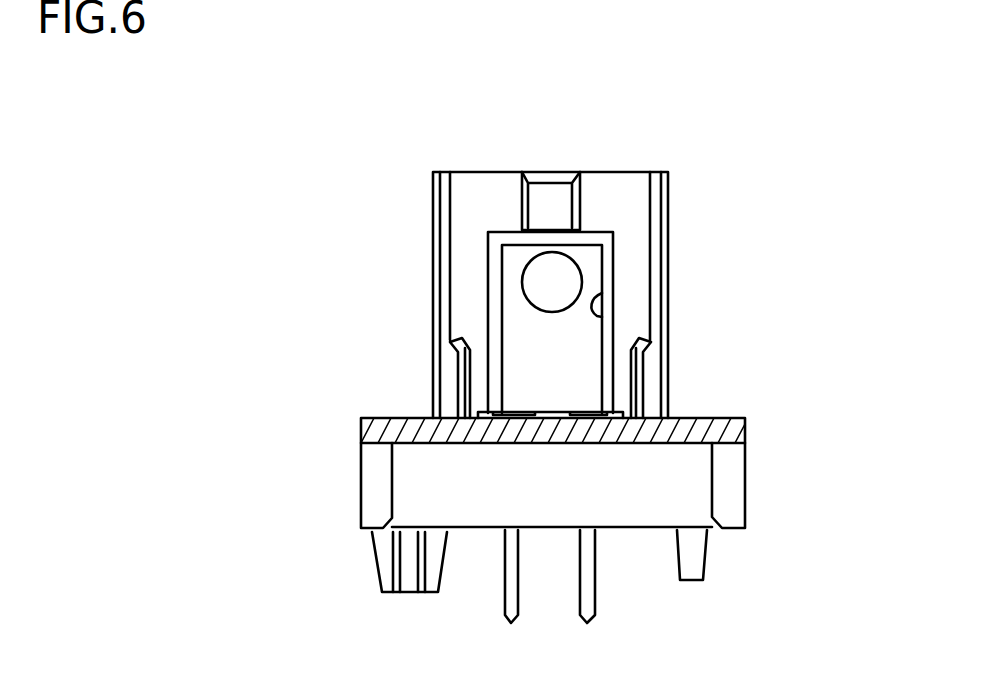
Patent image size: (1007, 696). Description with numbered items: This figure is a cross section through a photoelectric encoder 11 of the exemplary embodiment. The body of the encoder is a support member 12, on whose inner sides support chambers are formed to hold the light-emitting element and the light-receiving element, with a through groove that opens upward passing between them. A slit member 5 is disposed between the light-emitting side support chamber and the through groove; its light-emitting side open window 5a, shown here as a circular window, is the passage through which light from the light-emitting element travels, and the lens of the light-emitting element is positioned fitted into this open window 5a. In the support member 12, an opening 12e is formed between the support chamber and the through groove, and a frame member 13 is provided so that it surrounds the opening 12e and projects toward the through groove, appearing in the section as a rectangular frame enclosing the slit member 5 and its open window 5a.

The connector 11 is at (722, 75).
The housing 12 is at (492, 158).
The terminal holder 13 is at (608, 260).
The terminal 5 is at (587, 382).
The hole 5a is at (533, 282).
The protrusion 12e is at (597, 315).